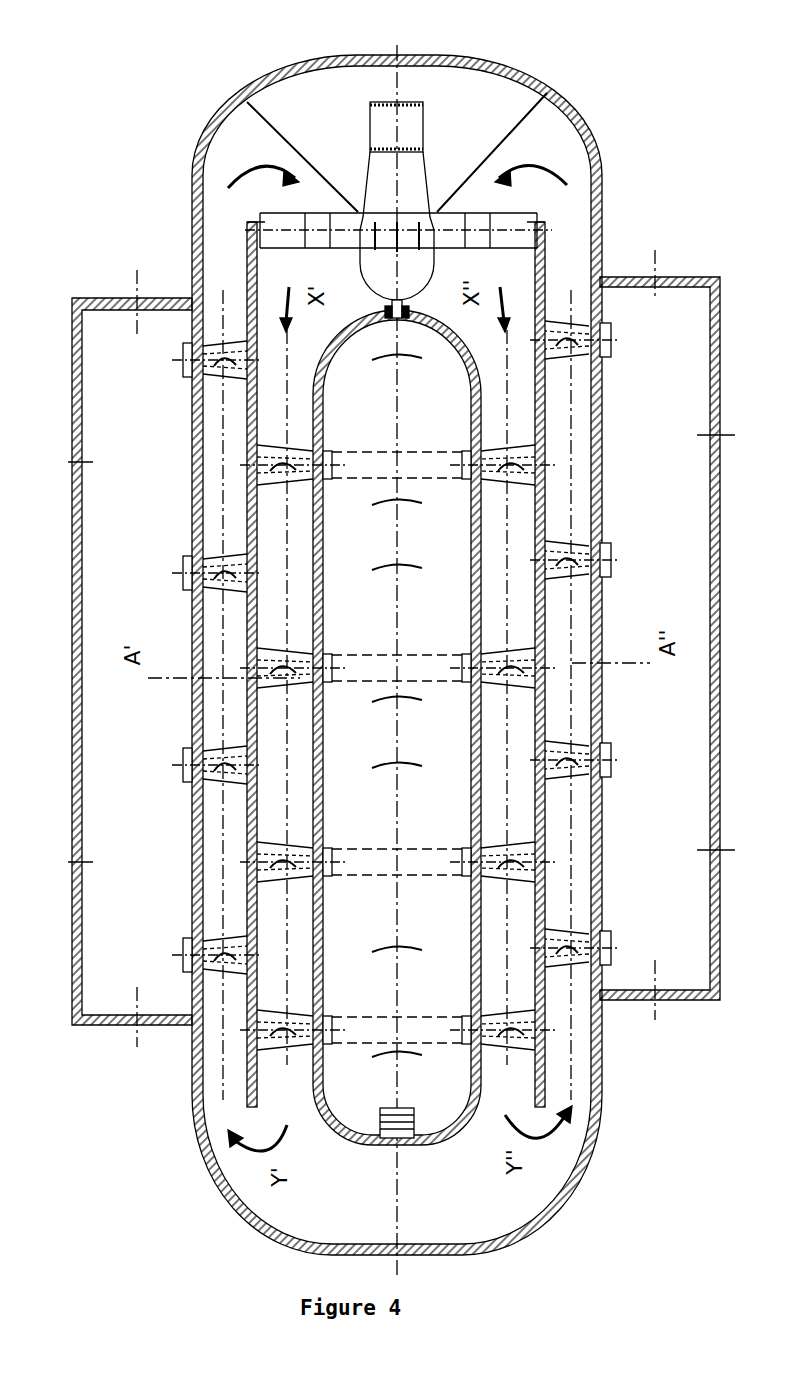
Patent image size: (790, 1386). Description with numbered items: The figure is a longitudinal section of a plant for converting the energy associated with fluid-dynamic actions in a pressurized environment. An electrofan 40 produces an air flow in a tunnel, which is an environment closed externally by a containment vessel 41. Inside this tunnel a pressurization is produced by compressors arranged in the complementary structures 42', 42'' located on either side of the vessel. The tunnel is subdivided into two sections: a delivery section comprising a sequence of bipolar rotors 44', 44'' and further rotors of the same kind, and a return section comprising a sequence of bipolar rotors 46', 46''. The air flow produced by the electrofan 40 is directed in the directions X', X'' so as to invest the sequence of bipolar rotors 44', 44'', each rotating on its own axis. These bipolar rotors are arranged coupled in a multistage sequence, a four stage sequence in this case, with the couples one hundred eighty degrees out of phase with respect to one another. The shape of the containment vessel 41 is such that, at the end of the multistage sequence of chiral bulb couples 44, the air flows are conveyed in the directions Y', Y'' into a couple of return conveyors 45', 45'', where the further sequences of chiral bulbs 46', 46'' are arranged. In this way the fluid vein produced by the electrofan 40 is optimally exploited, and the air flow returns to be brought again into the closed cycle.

The electrofan 40 is at (372, 182).
The containment vessel 41 is at (192, 210).
The complementary structure 42' is at (130, 658).
The complementary structure 42'' is at (667, 635).
The chiral bulb couples 44 is at (549, 1056).
The bipolar rotor 44' is at (305, 439).
The bipolar rotor 44'' is at (545, 432).
The return conveyor 45' is at (203, 739).
The return conveyor 45'' is at (586, 725).
The bipolar rotor 46' is at (206, 927).
The bipolar rotor 46'' is at (586, 912).